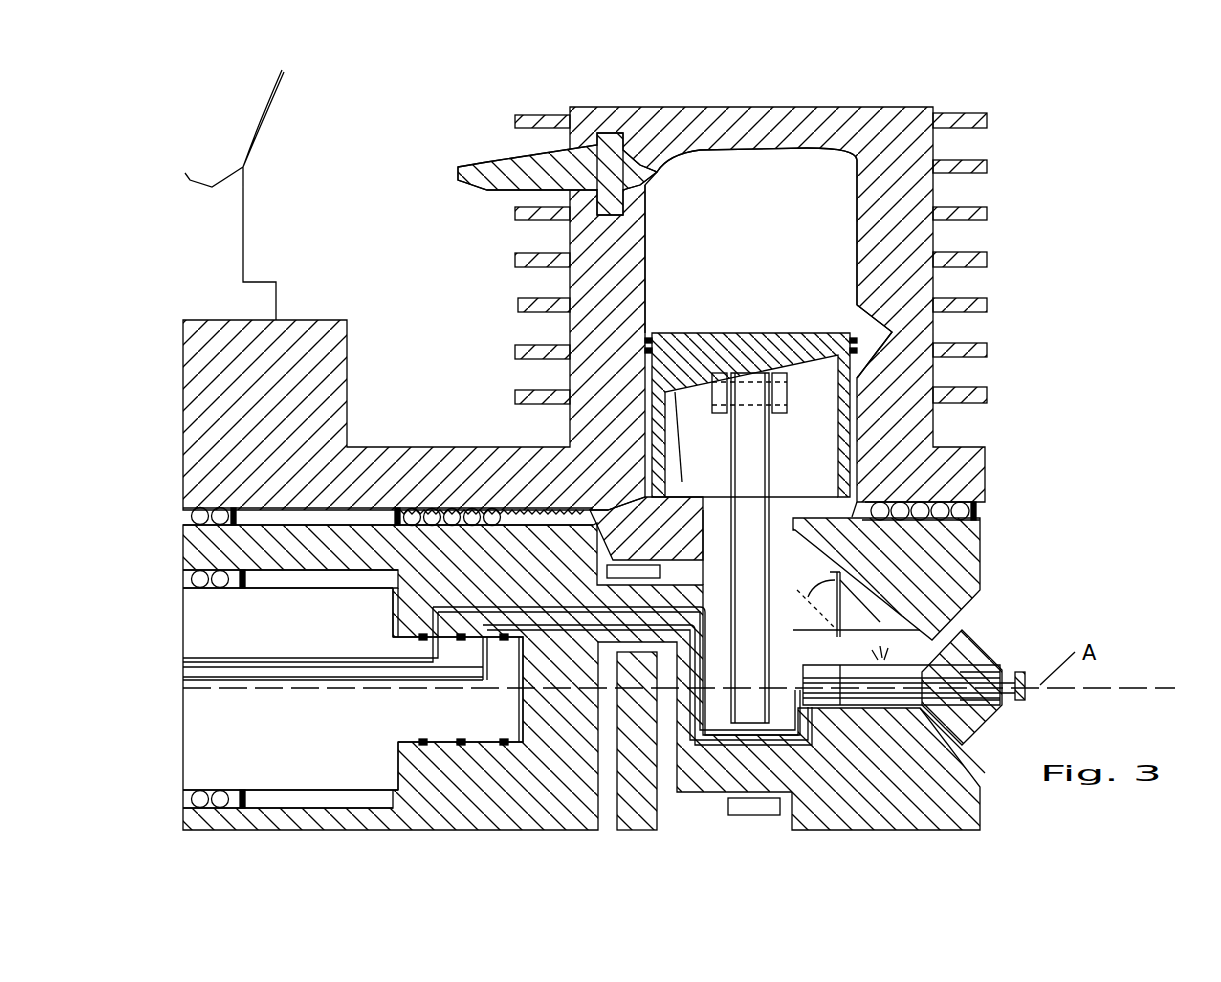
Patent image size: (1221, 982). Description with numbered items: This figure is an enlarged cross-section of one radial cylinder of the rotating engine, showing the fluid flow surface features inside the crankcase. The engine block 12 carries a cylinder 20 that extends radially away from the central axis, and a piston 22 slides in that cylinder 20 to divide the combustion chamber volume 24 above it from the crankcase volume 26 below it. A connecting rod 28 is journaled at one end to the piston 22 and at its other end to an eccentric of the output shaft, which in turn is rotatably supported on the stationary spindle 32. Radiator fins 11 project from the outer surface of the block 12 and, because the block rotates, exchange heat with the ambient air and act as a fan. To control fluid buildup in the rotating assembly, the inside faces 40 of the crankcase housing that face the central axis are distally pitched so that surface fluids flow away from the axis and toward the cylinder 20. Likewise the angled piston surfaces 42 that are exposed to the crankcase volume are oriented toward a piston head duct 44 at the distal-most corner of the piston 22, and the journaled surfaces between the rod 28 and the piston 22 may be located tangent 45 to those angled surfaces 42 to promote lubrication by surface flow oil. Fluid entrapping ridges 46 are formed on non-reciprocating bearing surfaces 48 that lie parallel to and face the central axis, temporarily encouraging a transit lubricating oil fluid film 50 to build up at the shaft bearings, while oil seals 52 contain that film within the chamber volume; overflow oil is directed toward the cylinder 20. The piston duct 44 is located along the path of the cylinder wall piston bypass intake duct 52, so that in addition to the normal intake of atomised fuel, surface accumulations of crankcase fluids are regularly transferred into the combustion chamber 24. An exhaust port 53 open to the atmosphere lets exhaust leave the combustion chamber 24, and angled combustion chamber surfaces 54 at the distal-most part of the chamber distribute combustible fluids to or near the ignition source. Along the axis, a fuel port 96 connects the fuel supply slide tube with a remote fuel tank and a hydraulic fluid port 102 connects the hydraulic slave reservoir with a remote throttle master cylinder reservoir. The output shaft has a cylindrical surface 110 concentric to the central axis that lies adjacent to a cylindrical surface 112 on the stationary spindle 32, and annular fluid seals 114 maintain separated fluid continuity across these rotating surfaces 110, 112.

The radiator fins 11 is at (990, 162).
The engine block 12 is at (898, 222).
The cylinder 20 is at (860, 475).
The piston 22 is at (797, 352).
The combustion chamber volume 24 is at (820, 280).
The crankcase volume 26 is at (800, 502).
The connecting rod 28 is at (752, 492).
The stationary spindle 32 is at (285, 742).
The inside faces of the crankcase housing 40 is at (640, 505).
The angled piston surfaces 42 is at (677, 472).
The piston head duct 44 is at (838, 368).
The tangent location of journaled surfaces 45 is at (710, 385).
The fluid entrapping ridges 46 is at (600, 513).
The non-reciprocating bearing surfaces 48 is at (613, 561).
The transit lubricating oil fluid film 50 is at (540, 505).
The oil seals 52 is at (872, 353).
The exhaust port 53 is at (595, 300).
The angled combustion chamber surfaces 54 is at (758, 148).
The fuel port 96 is at (285, 657).
The hydraulic fluid port 102 is at (300, 678).
The cylindrical surface of the output shaft 110 is at (478, 735).
The cylindrical surface on the stationary spindle 112 is at (457, 735).
The annular fluid seals 114 is at (458, 738).